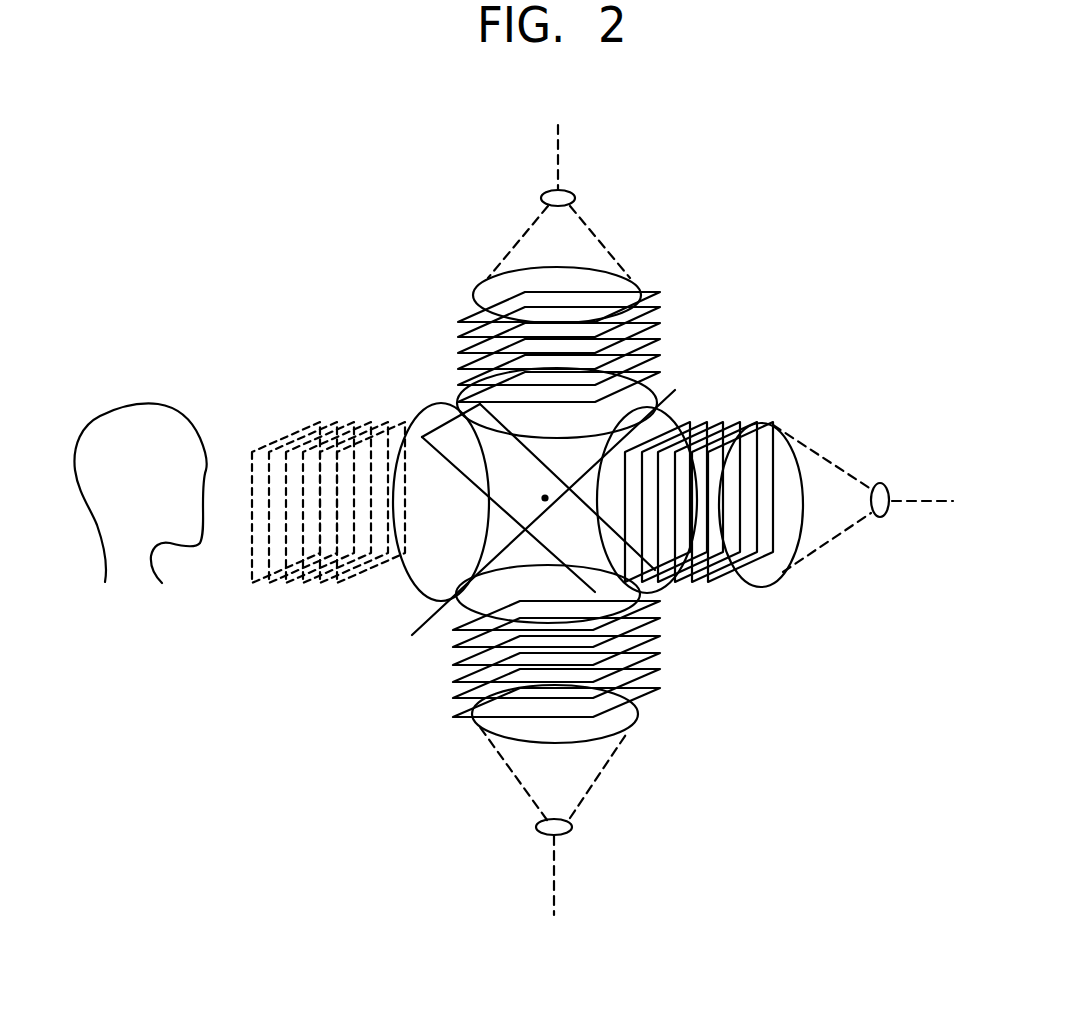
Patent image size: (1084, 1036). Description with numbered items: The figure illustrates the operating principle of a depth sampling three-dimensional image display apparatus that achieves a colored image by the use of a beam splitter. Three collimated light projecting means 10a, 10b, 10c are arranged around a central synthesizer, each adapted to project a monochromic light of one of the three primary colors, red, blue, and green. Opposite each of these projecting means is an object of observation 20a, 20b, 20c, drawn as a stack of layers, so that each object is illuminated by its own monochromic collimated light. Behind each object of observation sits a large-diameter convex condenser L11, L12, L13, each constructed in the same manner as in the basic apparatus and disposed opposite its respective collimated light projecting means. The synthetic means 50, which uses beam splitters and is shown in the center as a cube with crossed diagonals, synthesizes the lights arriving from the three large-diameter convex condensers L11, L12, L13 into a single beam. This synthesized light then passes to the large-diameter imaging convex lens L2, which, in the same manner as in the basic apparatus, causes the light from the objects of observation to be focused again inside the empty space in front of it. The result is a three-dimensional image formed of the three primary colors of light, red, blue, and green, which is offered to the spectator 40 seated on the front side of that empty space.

The collimated light projecting means 10a is at (838, 553).
The collimated light projecting means 10b is at (598, 785).
The collimated light projecting means 10c is at (620, 233).
The object of observation 20a is at (718, 598).
The object of observation 20b is at (445, 680).
The object of observation 20c is at (672, 332).
The spectator 40 is at (135, 570).
The synthetic means 50 is at (493, 550).
The large-diameter convex condenser L11 is at (662, 423).
The large-diameter convex condenser L12 is at (457, 600).
The large-diameter convex condenser L13 is at (480, 420).
The large-diameter imaging convex lens L2 is at (417, 517).